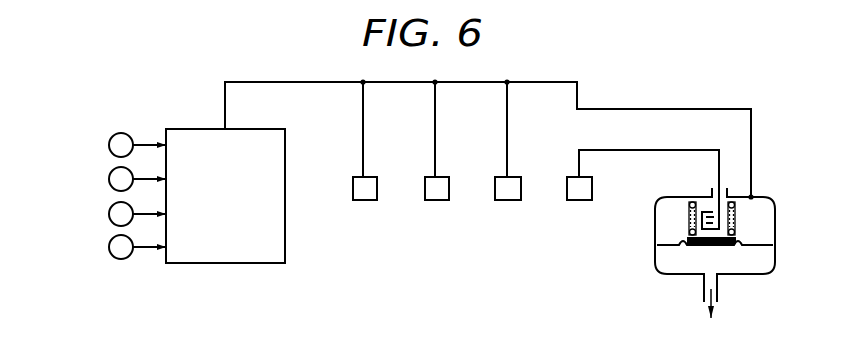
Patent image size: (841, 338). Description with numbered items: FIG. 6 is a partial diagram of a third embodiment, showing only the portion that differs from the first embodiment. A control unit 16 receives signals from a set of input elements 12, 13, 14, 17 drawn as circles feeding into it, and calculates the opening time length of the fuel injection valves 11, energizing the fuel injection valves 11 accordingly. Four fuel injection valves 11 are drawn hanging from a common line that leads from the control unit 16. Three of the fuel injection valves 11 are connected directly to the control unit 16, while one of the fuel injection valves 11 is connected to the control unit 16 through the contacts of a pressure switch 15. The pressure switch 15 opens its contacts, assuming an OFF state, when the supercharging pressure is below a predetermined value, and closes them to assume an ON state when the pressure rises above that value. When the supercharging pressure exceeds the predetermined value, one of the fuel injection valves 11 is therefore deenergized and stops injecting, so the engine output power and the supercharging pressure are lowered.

The fuel injection valves 11 is at (377, 192).
The sensor 12 is at (108, 145).
The sensor 13 is at (108, 179).
The sensor 14 is at (108, 214).
The pressure switch 15 is at (655, 243).
The control unit 16 is at (238, 265).
The sensor 17 is at (108, 247).